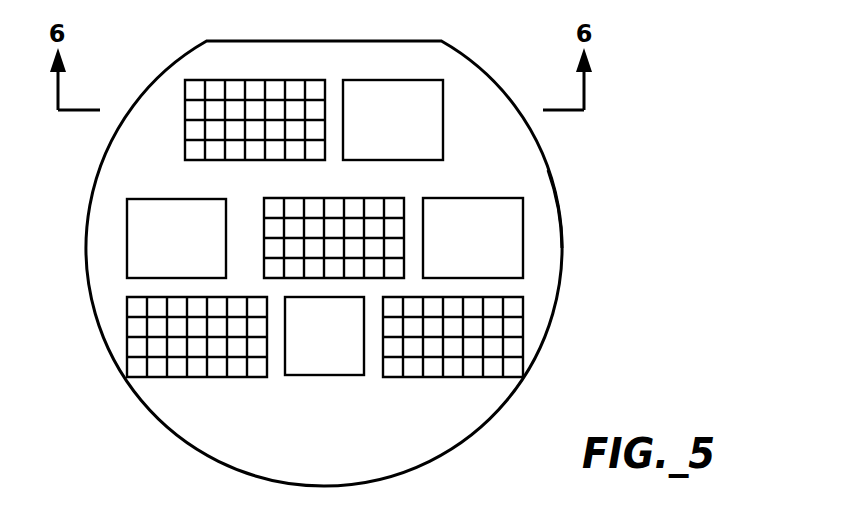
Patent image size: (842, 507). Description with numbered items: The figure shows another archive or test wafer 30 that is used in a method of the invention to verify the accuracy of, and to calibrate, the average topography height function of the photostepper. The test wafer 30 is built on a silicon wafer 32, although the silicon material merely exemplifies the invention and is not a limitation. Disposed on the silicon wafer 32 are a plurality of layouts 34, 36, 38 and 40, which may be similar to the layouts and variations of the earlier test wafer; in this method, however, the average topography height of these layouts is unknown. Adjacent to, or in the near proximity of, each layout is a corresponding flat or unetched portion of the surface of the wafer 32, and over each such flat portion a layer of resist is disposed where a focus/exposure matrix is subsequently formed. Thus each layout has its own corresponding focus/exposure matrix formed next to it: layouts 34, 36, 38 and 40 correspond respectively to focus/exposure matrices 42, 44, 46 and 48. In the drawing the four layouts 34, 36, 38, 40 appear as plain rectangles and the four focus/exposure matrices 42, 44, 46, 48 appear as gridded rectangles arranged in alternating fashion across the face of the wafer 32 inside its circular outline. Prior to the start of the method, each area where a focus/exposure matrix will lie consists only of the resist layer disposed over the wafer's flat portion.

The test wafer 30 is at (480, 35).
The silicon wafer 32 is at (550, 212).
The layout 34 is at (377, 79).
The layout 36 is at (523, 244).
The layout 38 is at (310, 376).
The layout 40 is at (126, 257).
The focus/exposure matrix 42 is at (252, 79).
The focus/exposure matrix 44 is at (292, 197).
The focus/exposure matrix 46 is at (473, 376).
The focus/exposure matrix 48 is at (180, 377).